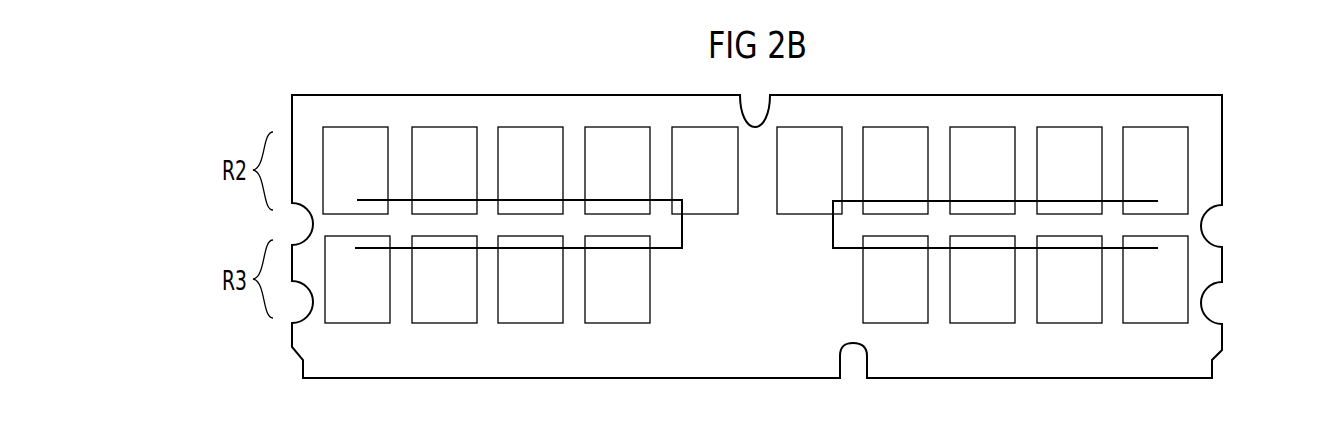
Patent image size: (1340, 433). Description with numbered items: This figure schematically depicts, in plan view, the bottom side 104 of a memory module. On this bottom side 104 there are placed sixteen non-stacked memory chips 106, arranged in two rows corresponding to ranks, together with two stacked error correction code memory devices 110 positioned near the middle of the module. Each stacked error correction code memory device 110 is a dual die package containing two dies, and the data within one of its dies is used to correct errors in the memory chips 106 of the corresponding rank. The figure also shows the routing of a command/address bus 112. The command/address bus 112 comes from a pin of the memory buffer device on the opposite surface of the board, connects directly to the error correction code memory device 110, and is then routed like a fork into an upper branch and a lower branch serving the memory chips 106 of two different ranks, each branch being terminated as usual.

The bottom side 104 is at (1235, 142).
The non-stacked memory chips 106 is at (337, 166).
The stacked error correction code memory device 110 is at (718, 214).
The command/address bus 112 is at (673, 252).